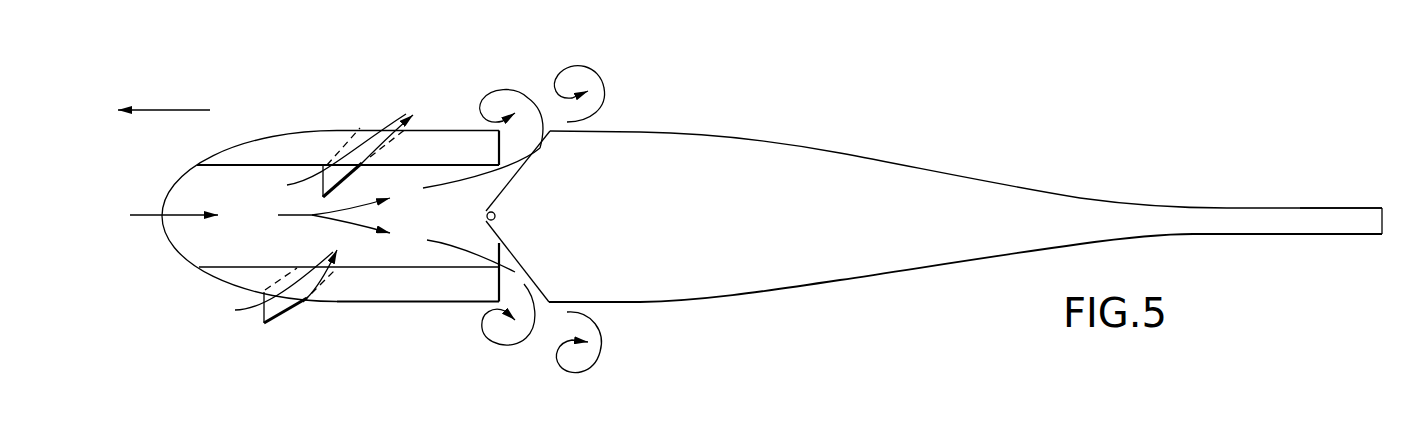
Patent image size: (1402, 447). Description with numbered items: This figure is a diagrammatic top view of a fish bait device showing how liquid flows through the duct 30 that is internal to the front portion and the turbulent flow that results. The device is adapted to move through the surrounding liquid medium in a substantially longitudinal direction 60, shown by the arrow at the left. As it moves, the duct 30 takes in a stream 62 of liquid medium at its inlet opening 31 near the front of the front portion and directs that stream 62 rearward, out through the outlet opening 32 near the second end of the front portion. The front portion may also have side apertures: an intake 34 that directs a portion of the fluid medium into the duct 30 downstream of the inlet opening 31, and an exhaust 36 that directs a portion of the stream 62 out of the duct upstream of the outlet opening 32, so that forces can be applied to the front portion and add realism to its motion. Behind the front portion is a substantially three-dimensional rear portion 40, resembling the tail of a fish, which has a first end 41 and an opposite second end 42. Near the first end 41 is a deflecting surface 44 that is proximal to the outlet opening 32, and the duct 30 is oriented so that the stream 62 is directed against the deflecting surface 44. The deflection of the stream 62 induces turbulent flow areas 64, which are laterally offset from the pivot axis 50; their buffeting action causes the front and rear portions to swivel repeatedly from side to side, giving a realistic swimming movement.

The duct 30 is at (267, 180).
The inlet opening 31 is at (200, 192).
The outlet opening 32 is at (496, 243).
The intake 34 is at (285, 313).
The exhaust 36 is at (345, 173).
The rear portion 40 is at (842, 292).
The first end 41 is at (620, 130).
The second end 42 is at (1308, 207).
The deflecting surface 44 is at (524, 278).
The pivot axis 50 is at (496, 214).
The direction 60 is at (172, 110).
The stream 62 is at (390, 125).
The turbulent flow area 64 is at (560, 72).